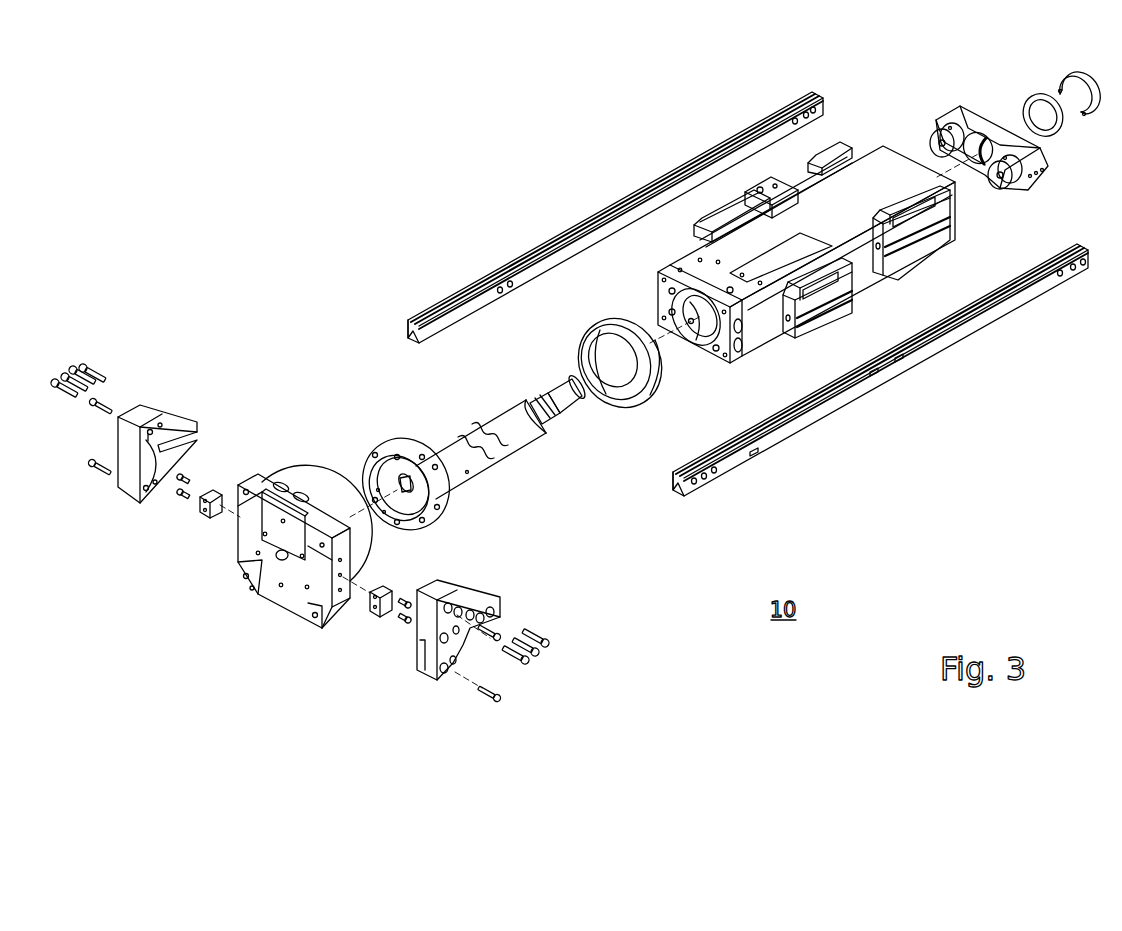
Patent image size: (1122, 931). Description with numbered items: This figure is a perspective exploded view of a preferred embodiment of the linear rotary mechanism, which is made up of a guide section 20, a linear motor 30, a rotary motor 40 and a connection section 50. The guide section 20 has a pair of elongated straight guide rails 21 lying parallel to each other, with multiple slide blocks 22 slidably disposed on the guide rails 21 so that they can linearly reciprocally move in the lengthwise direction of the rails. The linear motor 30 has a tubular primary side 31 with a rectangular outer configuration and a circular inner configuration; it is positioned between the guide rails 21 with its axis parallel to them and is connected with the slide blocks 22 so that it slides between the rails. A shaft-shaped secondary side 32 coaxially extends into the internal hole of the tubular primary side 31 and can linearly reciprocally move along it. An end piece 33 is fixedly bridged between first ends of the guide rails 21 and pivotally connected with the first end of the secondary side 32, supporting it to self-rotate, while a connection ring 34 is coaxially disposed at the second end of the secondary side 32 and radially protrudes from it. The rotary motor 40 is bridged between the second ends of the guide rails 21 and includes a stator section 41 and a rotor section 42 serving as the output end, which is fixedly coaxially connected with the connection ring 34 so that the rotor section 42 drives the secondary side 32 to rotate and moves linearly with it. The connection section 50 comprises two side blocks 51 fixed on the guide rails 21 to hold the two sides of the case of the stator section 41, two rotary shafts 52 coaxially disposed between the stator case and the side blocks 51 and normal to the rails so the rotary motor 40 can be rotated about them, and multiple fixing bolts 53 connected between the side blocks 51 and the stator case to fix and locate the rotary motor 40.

The guide section 20 is at (703, 110).
The guide rails 21 is at (593, 212).
The slide blocks 22 is at (720, 223).
The linear motor 30 is at (885, 112).
The tubular primary side 31 is at (898, 173).
The shaft-shaped secondary side 32 is at (527, 425).
The end piece 33 is at (1000, 120).
The connection ring 34 is at (398, 445).
The rotary motor 40 is at (281, 454).
The stator section 41 is at (298, 605).
The rotor section 42 is at (333, 483).
The connection section 50 is at (163, 392).
The side blocks 51 is at (128, 497).
The rotary shafts 52 is at (392, 613).
The fixing bolts 53 is at (480, 622).